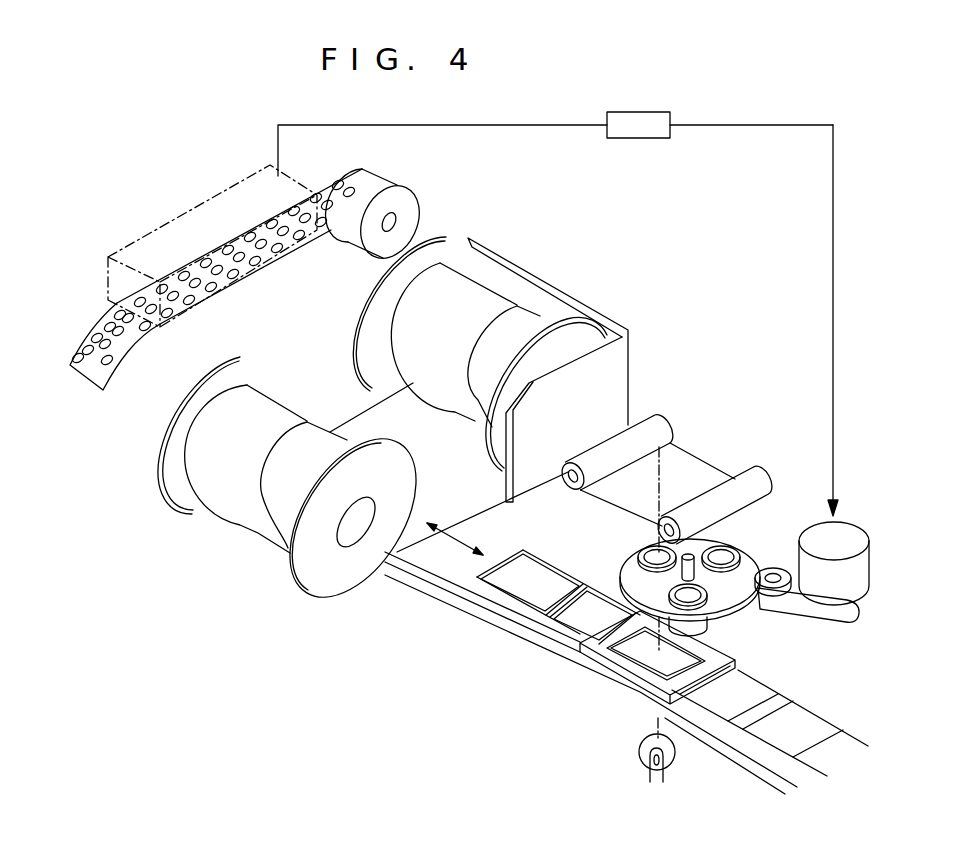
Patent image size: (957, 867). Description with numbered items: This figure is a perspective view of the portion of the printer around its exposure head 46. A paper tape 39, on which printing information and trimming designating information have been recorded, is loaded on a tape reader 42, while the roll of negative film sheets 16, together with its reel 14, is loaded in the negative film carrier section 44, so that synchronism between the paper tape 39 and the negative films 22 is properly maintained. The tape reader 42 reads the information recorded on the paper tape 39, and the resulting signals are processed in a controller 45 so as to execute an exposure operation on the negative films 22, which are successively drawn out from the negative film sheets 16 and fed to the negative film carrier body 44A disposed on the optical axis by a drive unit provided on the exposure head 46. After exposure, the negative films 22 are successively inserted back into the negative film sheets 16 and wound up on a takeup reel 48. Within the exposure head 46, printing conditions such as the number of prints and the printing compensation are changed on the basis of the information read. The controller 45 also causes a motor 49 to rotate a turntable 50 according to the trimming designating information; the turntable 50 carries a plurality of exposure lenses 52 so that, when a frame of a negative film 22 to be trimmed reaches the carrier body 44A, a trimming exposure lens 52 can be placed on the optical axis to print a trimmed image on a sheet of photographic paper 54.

The reel 14 is at (560, 304).
The negative film sheets 16 is at (466, 305).
The negative films 22 is at (727, 718).
The paper tape 39 is at (326, 230).
The tape reader 42 is at (170, 220).
The negative film carrier section 44 is at (415, 548).
The negative film carrier body 44A is at (602, 648).
The controller 45 is at (657, 132).
The exposure head 46 is at (787, 523).
The takeup reel 48 is at (343, 587).
The motor 49 is at (865, 568).
The turntable 50 is at (744, 562).
The exposure lenses 52 is at (707, 627).
The photographic paper 54 is at (697, 464).